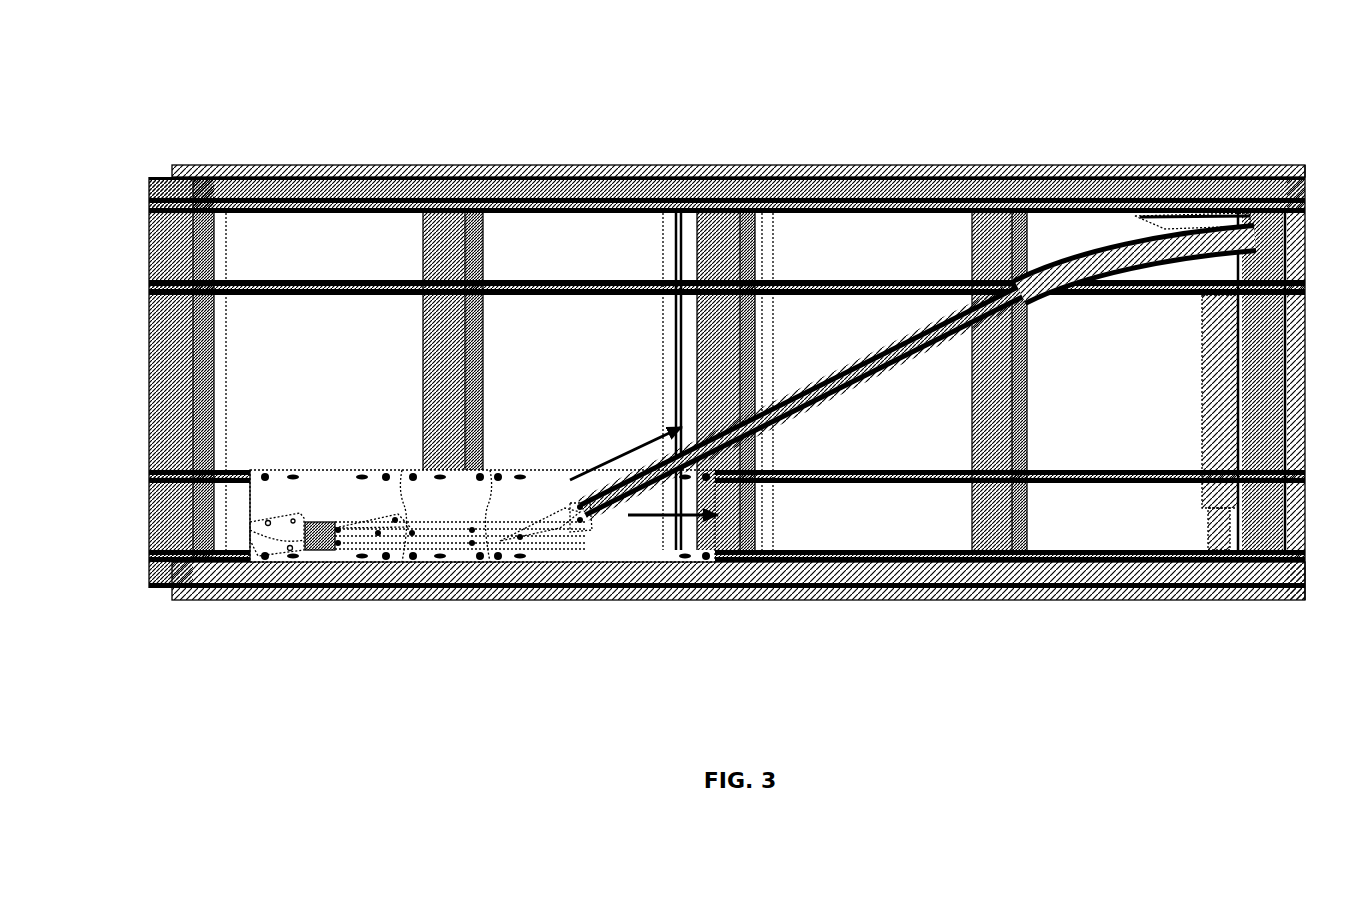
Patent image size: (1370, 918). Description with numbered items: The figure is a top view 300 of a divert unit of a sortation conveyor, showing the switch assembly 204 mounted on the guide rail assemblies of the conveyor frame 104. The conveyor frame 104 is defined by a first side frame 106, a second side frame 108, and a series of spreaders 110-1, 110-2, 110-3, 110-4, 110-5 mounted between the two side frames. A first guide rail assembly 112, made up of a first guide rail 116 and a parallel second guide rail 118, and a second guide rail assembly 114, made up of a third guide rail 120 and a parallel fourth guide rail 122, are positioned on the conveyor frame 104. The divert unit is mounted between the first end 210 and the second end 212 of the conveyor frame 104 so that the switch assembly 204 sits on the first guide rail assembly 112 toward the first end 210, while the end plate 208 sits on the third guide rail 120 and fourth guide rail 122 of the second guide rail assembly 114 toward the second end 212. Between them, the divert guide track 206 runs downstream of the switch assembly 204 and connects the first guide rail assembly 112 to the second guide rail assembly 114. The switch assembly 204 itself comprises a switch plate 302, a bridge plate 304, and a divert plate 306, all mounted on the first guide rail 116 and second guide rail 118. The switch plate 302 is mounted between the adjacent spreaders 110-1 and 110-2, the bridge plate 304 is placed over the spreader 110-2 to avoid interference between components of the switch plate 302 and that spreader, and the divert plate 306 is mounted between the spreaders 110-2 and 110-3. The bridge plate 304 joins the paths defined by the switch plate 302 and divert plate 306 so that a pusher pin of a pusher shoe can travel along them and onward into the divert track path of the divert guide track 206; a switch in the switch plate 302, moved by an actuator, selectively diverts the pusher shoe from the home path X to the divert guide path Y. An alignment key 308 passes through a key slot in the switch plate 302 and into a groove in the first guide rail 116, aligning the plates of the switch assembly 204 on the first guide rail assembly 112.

The top view 300 is at (135, 83).
The conveyor frame 104 is at (585, 368).
The first side frame 106 is at (205, 598).
The second side frame 108 is at (258, 165).
The spreader 110-1 is at (163, 367).
The spreader 110-2 is at (483, 367).
The spreader 110-3 is at (757, 360).
The spreader 110-4 is at (1027, 385).
The spreader 110-5 is at (1305, 395).
The first guide rail assembly 112 is at (1153, 483).
The second guide rail assembly 114 is at (604, 280).
The first guide rail 116 is at (149, 473).
The second guide rail 118 is at (149, 555).
The third guide rail 120 is at (155, 283).
The fourth guide rail 122 is at (149, 197).
The switch assembly 204 is at (354, 465).
The divert guide track 206 is at (800, 410).
The end plate 208 is at (1073, 200).
The first end 210 is at (245, 560).
The second end 212 is at (989, 205).
The switch plate 302 is at (320, 552).
The bridge plate 304 is at (443, 545).
The divert plate 306 is at (648, 545).
The alignment key 308 is at (287, 470).